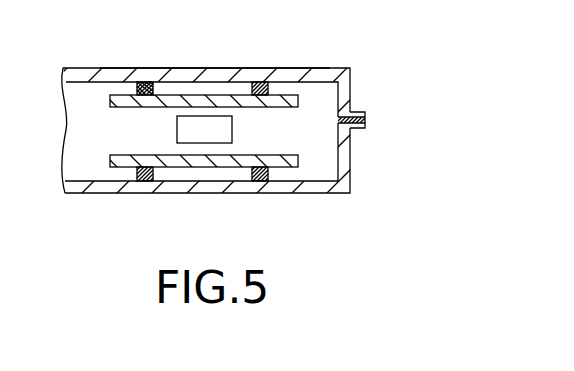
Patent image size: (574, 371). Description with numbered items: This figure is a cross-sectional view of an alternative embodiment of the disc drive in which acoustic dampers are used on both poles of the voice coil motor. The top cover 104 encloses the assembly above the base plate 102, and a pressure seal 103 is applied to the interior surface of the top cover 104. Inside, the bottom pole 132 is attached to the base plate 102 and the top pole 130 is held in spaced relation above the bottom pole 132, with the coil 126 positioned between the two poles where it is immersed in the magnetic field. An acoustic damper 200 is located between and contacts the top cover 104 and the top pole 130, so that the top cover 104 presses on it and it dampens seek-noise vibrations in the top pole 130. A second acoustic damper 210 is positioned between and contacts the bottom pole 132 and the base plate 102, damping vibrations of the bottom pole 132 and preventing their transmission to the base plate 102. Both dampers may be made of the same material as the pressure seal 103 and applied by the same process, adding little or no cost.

The base plate 102 is at (345, 190).
The pressure seal 103 is at (367, 121).
The top cover 104 is at (246, 68).
The coil 126 is at (222, 130).
The top pole 130 is at (128, 105).
The bottom pole 132 is at (205, 167).
The acoustic damper 200 is at (155, 88).
The second acoustic damper 210 is at (153, 177).